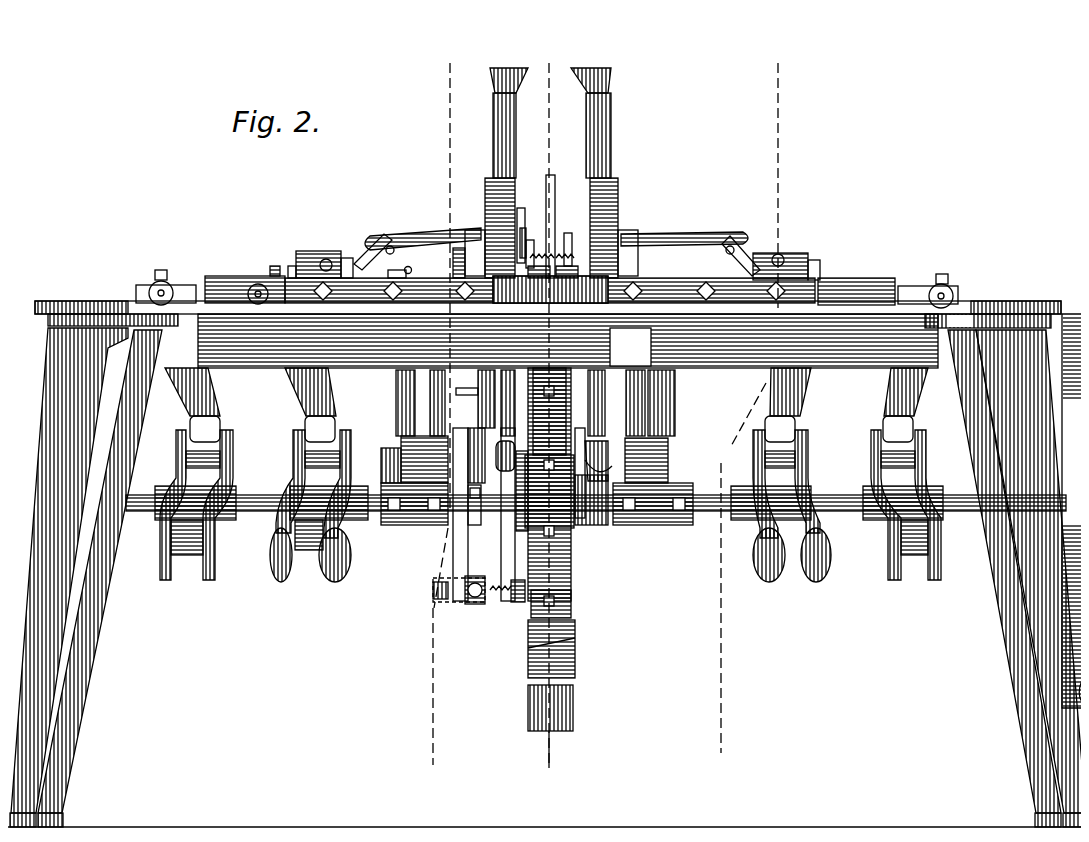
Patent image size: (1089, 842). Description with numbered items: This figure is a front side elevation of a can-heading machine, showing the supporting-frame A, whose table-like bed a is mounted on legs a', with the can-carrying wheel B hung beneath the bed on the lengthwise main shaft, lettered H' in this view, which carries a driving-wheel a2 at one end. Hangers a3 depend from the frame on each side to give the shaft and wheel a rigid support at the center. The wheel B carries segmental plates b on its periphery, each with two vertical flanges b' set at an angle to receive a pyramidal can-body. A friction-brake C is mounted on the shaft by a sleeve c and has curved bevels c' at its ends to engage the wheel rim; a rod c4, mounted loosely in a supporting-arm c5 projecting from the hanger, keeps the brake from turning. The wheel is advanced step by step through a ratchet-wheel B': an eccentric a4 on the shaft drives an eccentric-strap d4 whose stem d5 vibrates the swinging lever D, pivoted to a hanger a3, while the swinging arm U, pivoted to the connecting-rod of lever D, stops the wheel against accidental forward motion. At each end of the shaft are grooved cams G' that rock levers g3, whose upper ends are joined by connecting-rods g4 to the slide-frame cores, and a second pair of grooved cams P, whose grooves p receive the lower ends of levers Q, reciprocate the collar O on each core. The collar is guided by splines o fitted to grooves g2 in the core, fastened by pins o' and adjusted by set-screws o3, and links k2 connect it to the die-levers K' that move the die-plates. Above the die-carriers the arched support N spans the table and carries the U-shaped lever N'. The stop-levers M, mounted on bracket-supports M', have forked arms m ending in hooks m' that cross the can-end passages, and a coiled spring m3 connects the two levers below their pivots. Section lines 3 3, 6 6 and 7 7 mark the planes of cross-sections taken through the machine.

The bed a is at (548, 298).
The supporting-frame A is at (473, 377).
The legs a' is at (545, 577).
The driving-wheel a2 is at (1060, 305).
The hangers a3 is at (390, 392).
The eccentric a4 is at (448, 428).
The arched support N is at (551, 173).
The U-shaped lever N' is at (550, 307).
The lever M is at (541, 260).
The bracket-supports M' is at (535, 247).
The fork arm m is at (532, 233).
The hook m' is at (527, 229).
The coiled spring m3 is at (567, 255).
The die-lever K' is at (556, 243).
The links k2 is at (352, 250).
The splines o is at (414, 263).
The longitudinal grooves g2 is at (447, 268).
The collar O is at (300, 243).
The pins o' is at (552, 247).
The set-screws o3 is at (266, 258).
The connecting-rods g4 is at (226, 268).
The levers g3 is at (200, 384).
The levers Q is at (320, 385).
The hanger H' is at (550, 512).
The carrier-wheel B is at (596, 487).
The grooved cams G' is at (534, 535).
The grooved cams P is at (328, 574).
The grooves p is at (300, 548).
The swinging arm U is at (492, 546).
The swinging lever D is at (440, 548).
The eccentric-strap d4 is at (420, 500).
The stem d5 is at (380, 545).
The ratchet-wheel B' is at (521, 513).
The friction-brake C is at (568, 430).
The sleeve c is at (586, 509).
The curved bevels c' is at (573, 473).
The rod c4 is at (604, 461).
The supporting-arm c5 is at (660, 455).
The segmental plates b is at (568, 599).
The vertical flanges b' is at (568, 692).
The section line 7 7 is at (440, 417).
The section line 6 6 is at (549, 420).
The section line 3 3 is at (749, 410).